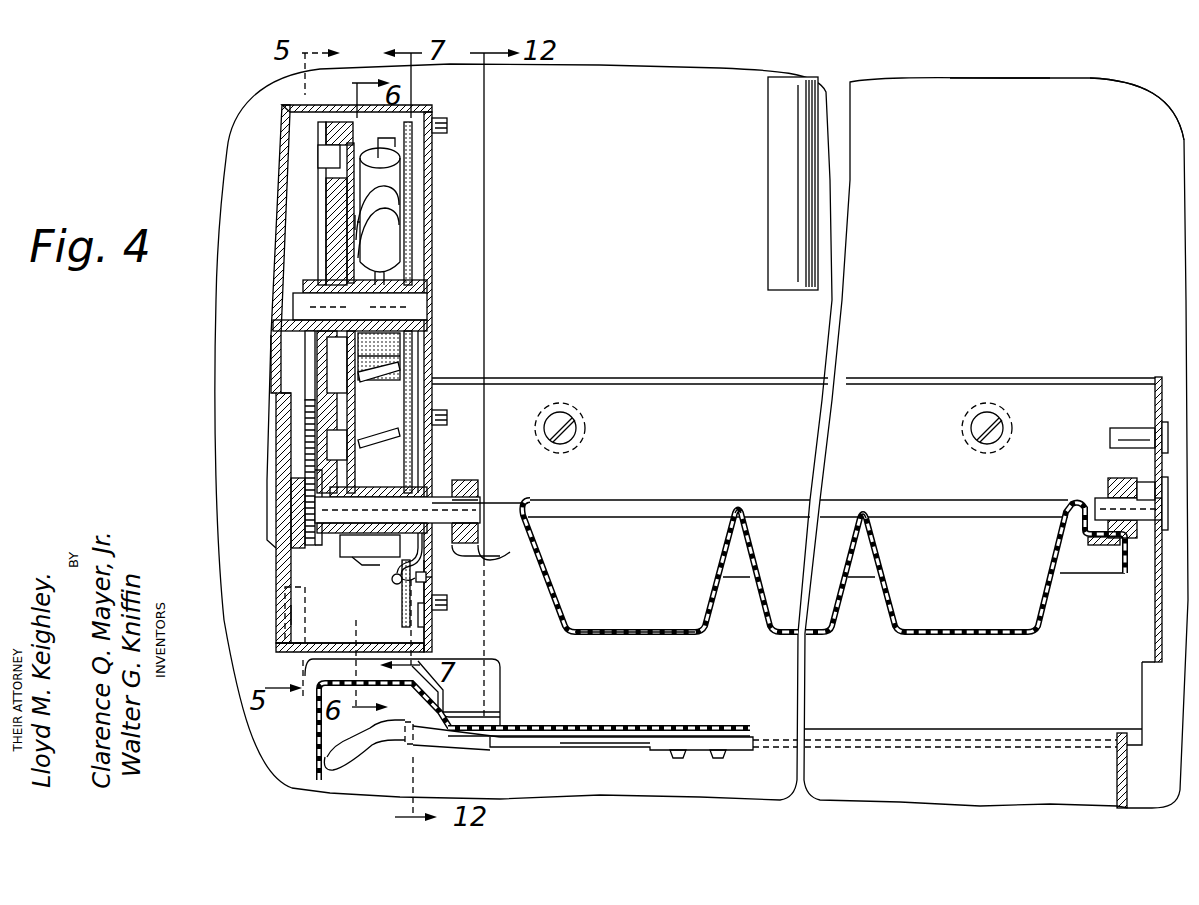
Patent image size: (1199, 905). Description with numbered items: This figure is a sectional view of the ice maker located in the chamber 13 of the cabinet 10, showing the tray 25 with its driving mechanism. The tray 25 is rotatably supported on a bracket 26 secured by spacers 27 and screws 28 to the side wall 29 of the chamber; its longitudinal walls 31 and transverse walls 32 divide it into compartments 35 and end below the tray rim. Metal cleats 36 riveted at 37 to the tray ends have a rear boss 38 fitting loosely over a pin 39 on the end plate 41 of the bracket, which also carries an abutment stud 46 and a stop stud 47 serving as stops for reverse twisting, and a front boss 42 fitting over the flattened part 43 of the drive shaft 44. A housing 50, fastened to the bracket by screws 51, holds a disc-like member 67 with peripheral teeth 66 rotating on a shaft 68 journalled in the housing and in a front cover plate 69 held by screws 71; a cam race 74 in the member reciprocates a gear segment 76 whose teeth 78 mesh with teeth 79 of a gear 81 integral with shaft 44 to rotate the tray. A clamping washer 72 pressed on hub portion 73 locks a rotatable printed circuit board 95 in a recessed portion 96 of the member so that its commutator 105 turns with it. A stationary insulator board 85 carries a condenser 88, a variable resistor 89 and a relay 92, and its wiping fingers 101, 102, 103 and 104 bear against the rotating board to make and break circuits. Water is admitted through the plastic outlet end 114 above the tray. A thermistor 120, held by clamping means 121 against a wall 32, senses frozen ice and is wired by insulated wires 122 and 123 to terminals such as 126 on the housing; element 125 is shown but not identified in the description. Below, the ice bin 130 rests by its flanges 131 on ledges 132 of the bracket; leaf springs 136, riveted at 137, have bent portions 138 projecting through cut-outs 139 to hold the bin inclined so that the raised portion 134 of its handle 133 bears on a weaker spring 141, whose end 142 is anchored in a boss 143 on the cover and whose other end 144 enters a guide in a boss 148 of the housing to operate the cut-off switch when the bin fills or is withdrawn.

The cabinet 10 is at (1130, 78).
The chamber 13 is at (1060, 181).
The tray 25 is at (955, 634).
The bracket 26 is at (905, 378).
The spacers 27 is at (586, 427).
The screws 28 is at (568, 424).
The vertical side wall 29 is at (995, 85).
The longitudinal upstanding walls 31 is at (640, 500).
The transverse upstanding walls 32 is at (740, 510).
The compartments 35 is at (668, 545).
The metal cleats 36 is at (468, 508).
The rivets 37 is at (1103, 548).
The boss 38 is at (1116, 478).
The pin 39 is at (1098, 504).
The rear end plate 41 is at (1158, 377).
The boss 42 is at (462, 480).
The flattened part 43 is at (458, 528).
The drive shaft 44 is at (324, 512).
The abutment stud 46 is at (1145, 490).
The stop stud 47 is at (1128, 428).
The housing 50 is at (432, 107).
The screws 51 is at (447, 418).
The teeth 66 is at (341, 524).
The disc-like member 67 is at (323, 133).
The shaft 68 is at (410, 305).
The front cover plate 69 is at (270, 350).
The screws 71 is at (447, 125).
The clamping washer 72 is at (362, 338).
The hub portion 73 is at (372, 288).
The cam race 74 is at (327, 155).
The gear segment 76 is at (305, 382).
The teeth 78 is at (308, 440).
The teeth 79 is at (300, 545).
The gear 81 is at (296, 508).
The insulator board 85 is at (405, 148).
The capacitor 88 is at (388, 256).
The variable resistor 89 is at (362, 566).
The relay 92 is at (372, 356).
The circular insulator board 95 is at (350, 190).
The recessed portion 96 is at (362, 150).
The wiping finger 101 is at (395, 197).
The wiping finger 102 is at (395, 212).
The wiping finger 103 is at (375, 375).
The wiping finger 104 is at (380, 435).
The commutator 105 is at (355, 222).
The outlet end portion 114 is at (770, 170).
The thermistor 120 is at (558, 578).
The clamping means 121 is at (553, 633).
The insulated wire 122 is at (396, 584).
The insulated wire 123 is at (410, 553).
The wire 125 is at (470, 560).
The insulated terminal 126 is at (455, 582).
The ice block storage bin 130 is at (1025, 762).
The flanges 131 is at (625, 724).
The ledges 132 is at (372, 746).
The handle 133 is at (318, 762).
The raised portion 134 is at (345, 683).
The leaf springs 136 is at (520, 750).
The rivets 137 is at (717, 758).
The upwardly bent portion 138 is at (475, 738).
The cut-out part 139 is at (425, 742).
The spring 141 is at (298, 650).
The spring end 142 is at (288, 595).
The boss 143 is at (290, 618).
The spring end 144 is at (404, 618).
The boss 148 is at (433, 640).